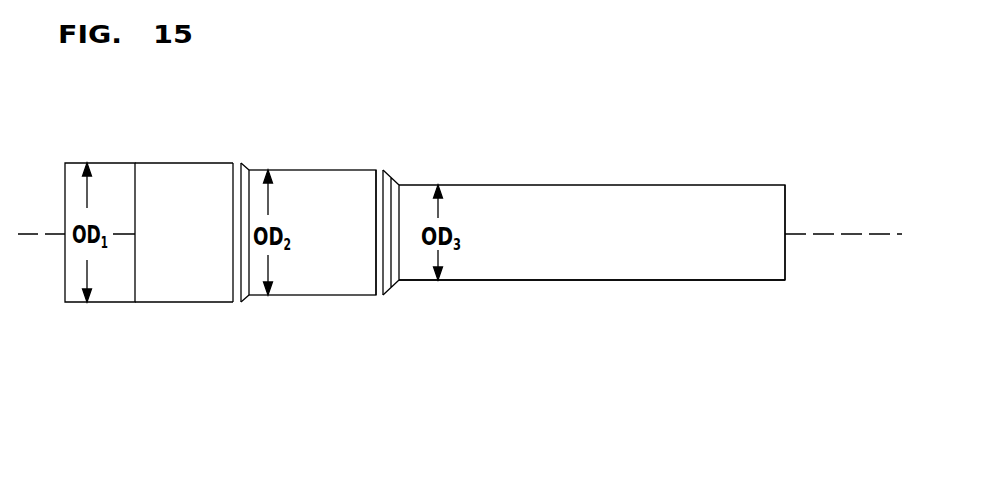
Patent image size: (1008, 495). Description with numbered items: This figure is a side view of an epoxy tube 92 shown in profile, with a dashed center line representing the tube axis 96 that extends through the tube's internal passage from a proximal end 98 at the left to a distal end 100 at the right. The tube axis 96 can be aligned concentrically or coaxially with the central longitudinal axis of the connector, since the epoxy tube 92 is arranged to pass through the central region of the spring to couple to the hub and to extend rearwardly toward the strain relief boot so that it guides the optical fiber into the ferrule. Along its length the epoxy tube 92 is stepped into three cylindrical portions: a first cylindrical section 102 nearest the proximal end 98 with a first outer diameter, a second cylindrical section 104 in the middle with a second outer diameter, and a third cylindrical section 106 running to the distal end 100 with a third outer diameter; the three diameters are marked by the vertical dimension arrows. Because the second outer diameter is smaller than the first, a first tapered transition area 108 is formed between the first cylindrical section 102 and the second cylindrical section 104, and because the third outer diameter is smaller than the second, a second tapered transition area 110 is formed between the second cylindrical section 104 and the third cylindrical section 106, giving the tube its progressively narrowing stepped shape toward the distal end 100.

The epoxy tube 92 is at (510, 159).
The tube axis 96 is at (875, 232).
The proximal end 98 is at (154, 318).
The distal end 100 is at (785, 296).
The first cylindrical section 102 is at (217, 318).
The second cylindrical section 104 is at (332, 158).
The third cylindrical section 106 is at (514, 295).
The first tapered transition area 108 is at (250, 151).
The second tapered transition area 110 is at (397, 164).